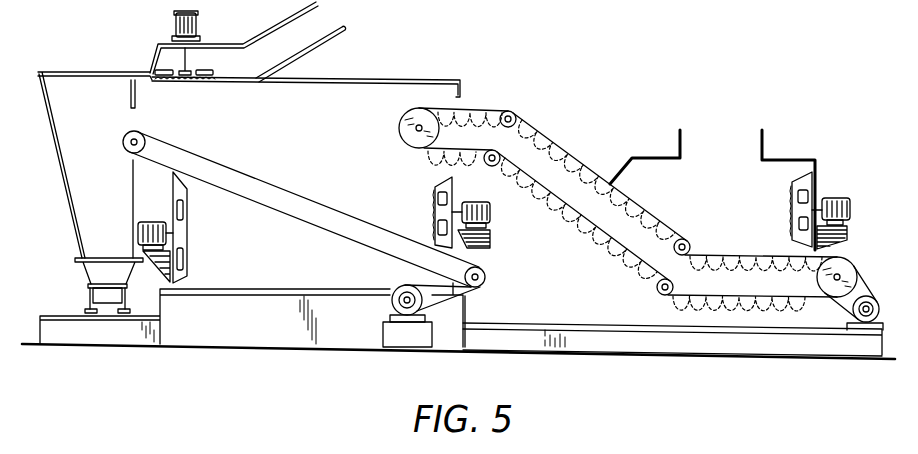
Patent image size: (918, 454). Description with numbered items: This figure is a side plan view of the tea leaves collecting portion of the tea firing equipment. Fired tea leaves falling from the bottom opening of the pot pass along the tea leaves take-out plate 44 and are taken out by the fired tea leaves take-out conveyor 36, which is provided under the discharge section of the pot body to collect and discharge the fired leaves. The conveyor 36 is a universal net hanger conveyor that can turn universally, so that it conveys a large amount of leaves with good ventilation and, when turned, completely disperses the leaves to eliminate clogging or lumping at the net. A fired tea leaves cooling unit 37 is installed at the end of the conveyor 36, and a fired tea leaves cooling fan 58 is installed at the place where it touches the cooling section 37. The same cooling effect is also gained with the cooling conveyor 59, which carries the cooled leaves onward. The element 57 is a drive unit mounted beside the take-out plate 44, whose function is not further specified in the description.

The fired tea leaves take-out conveyor 36 is at (553, 150).
The fired tea leaves cooling unit 37 is at (383, 79).
The tea leaves take-out plate 44 is at (790, 157).
The vibrator drive unit 57 is at (793, 188).
The fired tea leaves cooling fan 58 is at (437, 194).
The cooling conveyor 59 is at (289, 216).